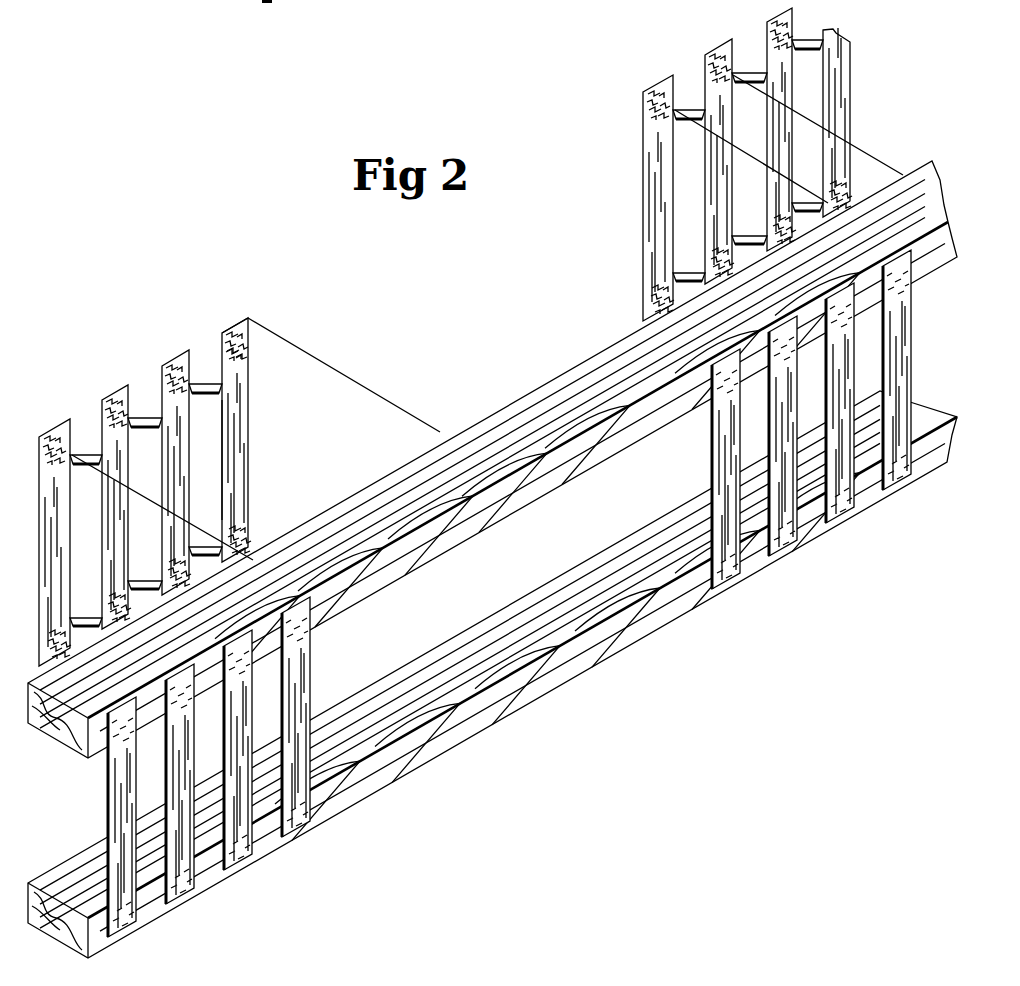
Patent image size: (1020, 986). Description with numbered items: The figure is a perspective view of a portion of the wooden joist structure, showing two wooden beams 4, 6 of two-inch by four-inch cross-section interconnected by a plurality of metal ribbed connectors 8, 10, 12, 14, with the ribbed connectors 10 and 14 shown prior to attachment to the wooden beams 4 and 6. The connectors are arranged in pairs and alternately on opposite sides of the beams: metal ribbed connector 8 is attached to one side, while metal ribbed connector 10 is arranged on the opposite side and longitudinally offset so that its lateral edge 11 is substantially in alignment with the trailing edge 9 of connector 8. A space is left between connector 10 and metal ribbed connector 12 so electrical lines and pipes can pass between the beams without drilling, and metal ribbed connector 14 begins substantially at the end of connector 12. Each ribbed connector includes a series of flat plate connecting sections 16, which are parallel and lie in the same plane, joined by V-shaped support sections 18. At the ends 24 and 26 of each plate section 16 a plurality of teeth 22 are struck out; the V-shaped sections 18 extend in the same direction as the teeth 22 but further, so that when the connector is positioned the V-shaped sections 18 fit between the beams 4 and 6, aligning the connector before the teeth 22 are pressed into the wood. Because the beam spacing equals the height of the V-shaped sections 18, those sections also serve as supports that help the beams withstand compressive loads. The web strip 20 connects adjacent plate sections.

The wooden beam 4 is at (557, 386).
The wooden beam 6 is at (592, 657).
The metal ribbed connector 8 is at (189, 767).
The trailing edge 9 is at (311, 676).
The metal ribbed connector 10 is at (239, 472).
The lateral edge 11 is at (260, 420).
The metal ribbed connector 12 is at (906, 354).
The metal ribbed connector 14 is at (675, 70).
The flat plate connecting section 16 is at (236, 322).
The V-shaped support section 18 is at (214, 462).
The connecting web strip 20 is at (89, 450).
The teeth 22 is at (244, 352).
The end of plate section 24 is at (250, 332).
The end of plate section 26 is at (252, 527).